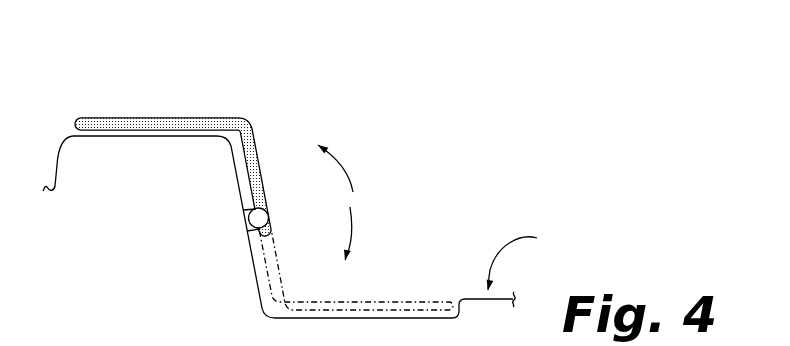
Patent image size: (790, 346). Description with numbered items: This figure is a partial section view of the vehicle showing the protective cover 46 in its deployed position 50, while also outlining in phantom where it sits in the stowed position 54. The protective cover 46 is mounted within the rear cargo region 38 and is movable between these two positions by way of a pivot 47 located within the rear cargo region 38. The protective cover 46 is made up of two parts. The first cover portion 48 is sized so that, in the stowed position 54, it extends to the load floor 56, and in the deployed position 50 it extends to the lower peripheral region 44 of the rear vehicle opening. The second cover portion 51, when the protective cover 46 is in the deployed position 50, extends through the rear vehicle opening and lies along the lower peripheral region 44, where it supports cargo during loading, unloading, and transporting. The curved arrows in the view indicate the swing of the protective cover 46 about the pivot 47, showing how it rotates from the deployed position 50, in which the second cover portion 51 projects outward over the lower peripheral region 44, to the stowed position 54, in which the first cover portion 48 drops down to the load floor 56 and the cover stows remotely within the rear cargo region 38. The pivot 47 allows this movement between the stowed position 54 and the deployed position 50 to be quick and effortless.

The rear cargo region 38 is at (472, 168).
The lower peripheral region 44 is at (178, 137).
The protective cover 46 is at (297, 60).
The pivot 47 is at (257, 218).
The first cover portion 48 is at (263, 168).
The deployed position 50 is at (345, 170).
The second cover portion 51 is at (162, 118).
The stowed position 54 is at (350, 228).
The load floor 56 is at (524, 259).